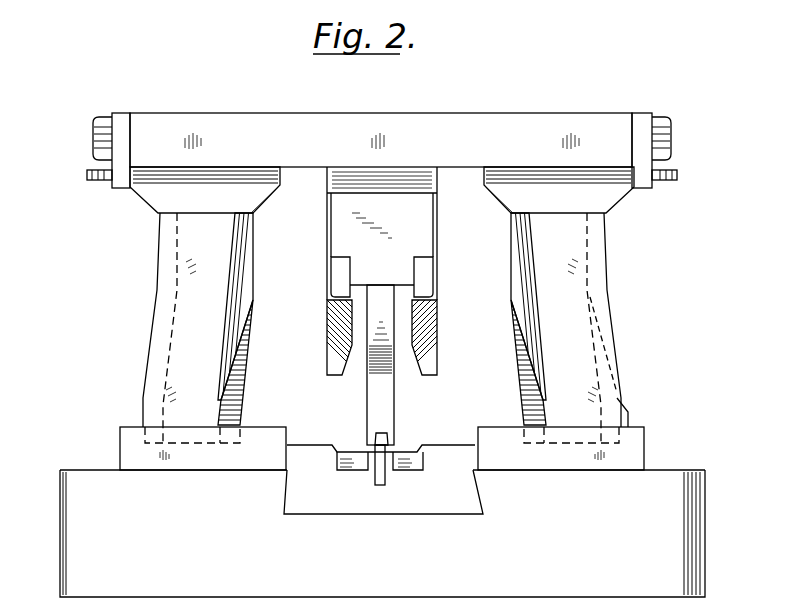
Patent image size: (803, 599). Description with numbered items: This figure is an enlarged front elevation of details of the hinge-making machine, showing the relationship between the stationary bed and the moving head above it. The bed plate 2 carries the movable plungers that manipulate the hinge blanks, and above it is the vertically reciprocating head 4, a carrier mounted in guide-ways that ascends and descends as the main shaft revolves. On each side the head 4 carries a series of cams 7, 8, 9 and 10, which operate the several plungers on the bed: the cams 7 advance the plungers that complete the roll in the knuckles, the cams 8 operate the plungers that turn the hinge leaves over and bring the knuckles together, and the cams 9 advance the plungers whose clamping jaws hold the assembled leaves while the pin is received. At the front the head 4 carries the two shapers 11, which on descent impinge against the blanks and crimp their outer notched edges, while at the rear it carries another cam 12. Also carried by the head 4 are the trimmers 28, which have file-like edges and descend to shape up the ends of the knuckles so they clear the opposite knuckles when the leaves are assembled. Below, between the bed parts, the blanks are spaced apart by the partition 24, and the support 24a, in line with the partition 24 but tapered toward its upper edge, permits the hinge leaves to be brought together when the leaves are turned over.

The bed plate 2 is at (382, 512).
The vertically reciprocating head 4 is at (382, 150).
The cam 7 is at (382, 305).
The cam 8 is at (245, 268).
The cam 9 is at (250, 355).
The cam 10 is at (622, 412).
The shaper 11 is at (343, 283).
The cam 12 is at (383, 395).
The partition 24 is at (383, 477).
The support 24a is at (383, 438).
The trimmer 28 is at (333, 334).